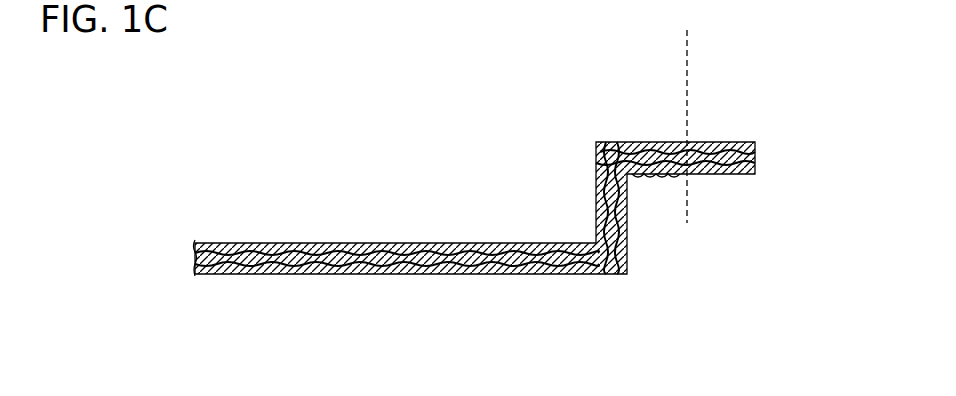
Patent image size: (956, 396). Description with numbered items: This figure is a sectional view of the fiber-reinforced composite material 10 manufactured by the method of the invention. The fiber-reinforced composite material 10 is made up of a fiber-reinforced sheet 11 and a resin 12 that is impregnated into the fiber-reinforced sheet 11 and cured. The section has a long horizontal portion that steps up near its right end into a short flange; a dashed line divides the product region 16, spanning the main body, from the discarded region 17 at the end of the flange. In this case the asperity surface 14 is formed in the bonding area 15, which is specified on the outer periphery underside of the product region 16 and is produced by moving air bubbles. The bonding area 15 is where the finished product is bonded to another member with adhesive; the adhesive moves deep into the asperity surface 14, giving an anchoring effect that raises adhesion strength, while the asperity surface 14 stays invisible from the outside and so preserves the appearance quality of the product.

The fiber-reinforced composite material 10 is at (303, 62).
The fiber-reinforced sheet 11 is at (401, 262).
The resin 12 is at (485, 272).
The asperity surface 14 is at (683, 176).
The bonding area 15 is at (683, 188).
The product region 16 is at (682, 92).
The discarded region 17 is at (745, 92).